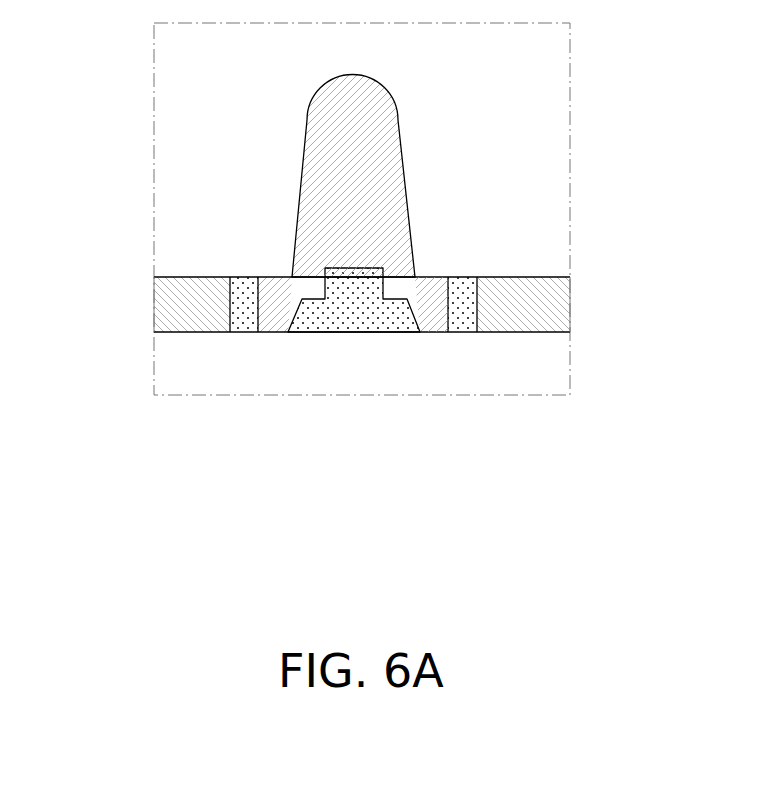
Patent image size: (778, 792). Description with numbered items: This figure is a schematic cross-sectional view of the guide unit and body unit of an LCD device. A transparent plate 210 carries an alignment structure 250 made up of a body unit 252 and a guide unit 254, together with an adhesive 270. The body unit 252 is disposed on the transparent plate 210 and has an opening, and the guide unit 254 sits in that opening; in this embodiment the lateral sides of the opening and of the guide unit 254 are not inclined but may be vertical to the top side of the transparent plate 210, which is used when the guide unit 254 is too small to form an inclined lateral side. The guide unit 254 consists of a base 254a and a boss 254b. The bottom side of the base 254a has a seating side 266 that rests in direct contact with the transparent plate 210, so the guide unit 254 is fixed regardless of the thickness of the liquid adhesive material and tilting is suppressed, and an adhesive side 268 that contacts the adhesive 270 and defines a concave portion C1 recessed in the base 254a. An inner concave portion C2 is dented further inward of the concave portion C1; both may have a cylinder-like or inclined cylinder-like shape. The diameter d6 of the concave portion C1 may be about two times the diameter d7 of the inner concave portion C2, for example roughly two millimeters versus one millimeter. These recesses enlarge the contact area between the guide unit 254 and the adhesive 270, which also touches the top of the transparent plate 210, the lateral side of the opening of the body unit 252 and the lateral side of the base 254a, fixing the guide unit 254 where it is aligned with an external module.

The transparent plate 210 is at (538, 375).
The pixel defining structure 250 is at (566, 586).
The body unit 252 is at (538, 303).
The guide unit 254 is at (660, 130).
The base 254a is at (423, 288).
The boss 254b is at (363, 131).
The seating side 266 is at (432, 333).
The adhesive side 268 is at (400, 318).
The adhesive 270 is at (248, 285).
The concave portion C1 is at (352, 338).
The inner concave portion C2 is at (348, 280).
The diameter of the concave portion d6 is at (302, 335).
The diameter of the inner concave portion d7 is at (330, 335).